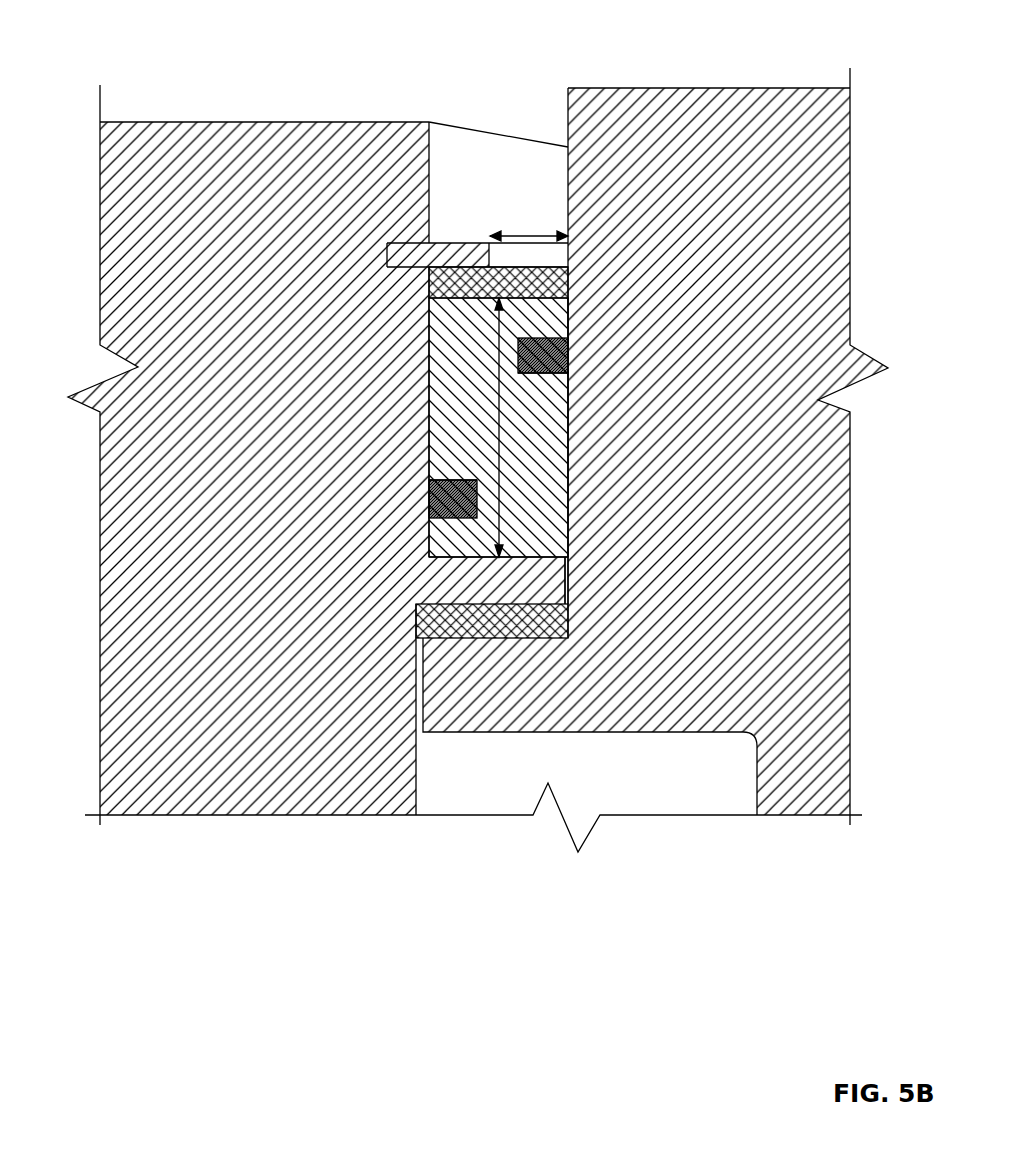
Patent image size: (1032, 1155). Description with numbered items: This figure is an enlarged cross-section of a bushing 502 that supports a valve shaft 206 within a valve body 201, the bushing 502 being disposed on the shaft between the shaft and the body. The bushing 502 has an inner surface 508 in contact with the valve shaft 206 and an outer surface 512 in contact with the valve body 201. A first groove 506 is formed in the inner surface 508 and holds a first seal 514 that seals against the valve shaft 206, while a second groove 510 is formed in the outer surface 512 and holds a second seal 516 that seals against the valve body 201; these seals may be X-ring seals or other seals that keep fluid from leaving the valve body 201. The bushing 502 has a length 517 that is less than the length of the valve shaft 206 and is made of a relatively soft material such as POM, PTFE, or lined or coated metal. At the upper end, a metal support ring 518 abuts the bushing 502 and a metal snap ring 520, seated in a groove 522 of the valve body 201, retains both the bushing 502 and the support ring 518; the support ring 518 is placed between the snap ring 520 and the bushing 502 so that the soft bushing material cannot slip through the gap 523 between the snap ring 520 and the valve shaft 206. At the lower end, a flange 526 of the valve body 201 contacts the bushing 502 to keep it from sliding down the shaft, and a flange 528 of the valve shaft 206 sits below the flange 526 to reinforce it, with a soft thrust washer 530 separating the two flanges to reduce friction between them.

The valve body 201 is at (100, 236).
The valve shaft 206 is at (850, 236).
The bushing 502 is at (554, 65).
The first groove 506 is at (568, 357).
The inner surface 508 is at (568, 425).
The second groove 510 is at (429, 497).
The outer surface 512 is at (429, 375).
The first seal 514 is at (542, 356).
The second seal 516 is at (452, 492).
The length 517 is at (500, 507).
The support ring 518 is at (568, 287).
The snap ring 520 is at (430, 243).
The groove 522 is at (385, 248).
The gap 523 is at (537, 234).
The flange 526 is at (552, 587).
The flange 528 is at (442, 688).
The thrust washer 530 is at (562, 630).